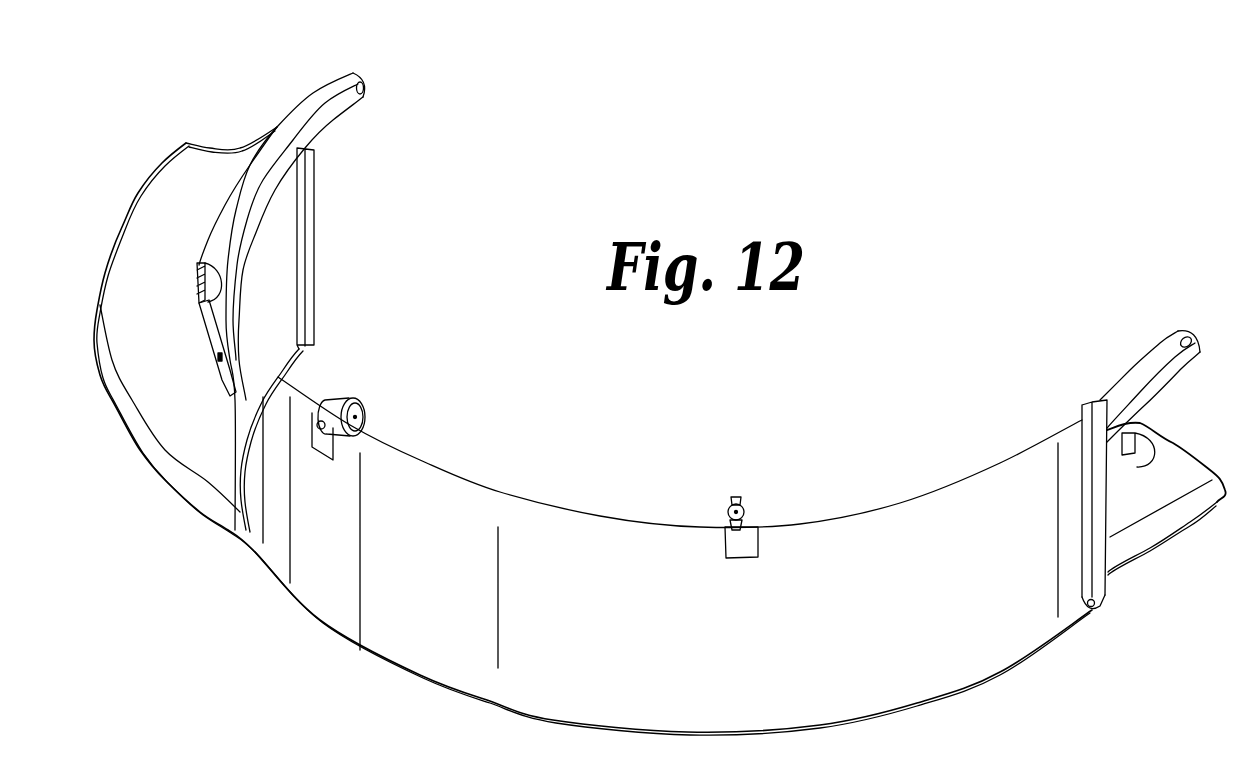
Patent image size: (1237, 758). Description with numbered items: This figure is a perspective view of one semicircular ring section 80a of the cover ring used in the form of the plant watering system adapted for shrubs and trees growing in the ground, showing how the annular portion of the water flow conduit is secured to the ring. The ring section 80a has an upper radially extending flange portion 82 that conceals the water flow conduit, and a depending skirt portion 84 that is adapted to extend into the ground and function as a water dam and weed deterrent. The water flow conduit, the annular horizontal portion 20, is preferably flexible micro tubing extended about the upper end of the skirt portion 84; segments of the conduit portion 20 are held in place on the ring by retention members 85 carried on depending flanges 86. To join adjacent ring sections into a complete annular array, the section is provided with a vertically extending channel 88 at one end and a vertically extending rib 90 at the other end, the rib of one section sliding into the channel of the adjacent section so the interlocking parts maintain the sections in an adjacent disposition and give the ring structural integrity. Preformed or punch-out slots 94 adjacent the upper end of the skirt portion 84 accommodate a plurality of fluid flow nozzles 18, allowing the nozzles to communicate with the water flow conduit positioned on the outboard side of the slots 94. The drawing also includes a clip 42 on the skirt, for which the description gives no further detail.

The fluid flow nozzle 18 is at (337, 407).
The annular horizontal portion of the water flow conduit 20 is at (310, 100).
The clip 42 is at (745, 503).
The ring section 80a is at (603, 518).
The upper radially extending flange portion 82 is at (213, 143).
The depending skirt portion 84 is at (1025, 660).
The retention member 85 is at (215, 297).
The depending flange 86 is at (205, 343).
The vertically extending channel 88 is at (1092, 612).
The vertically extending rib 90 is at (313, 223).
The slot 94 is at (327, 452).